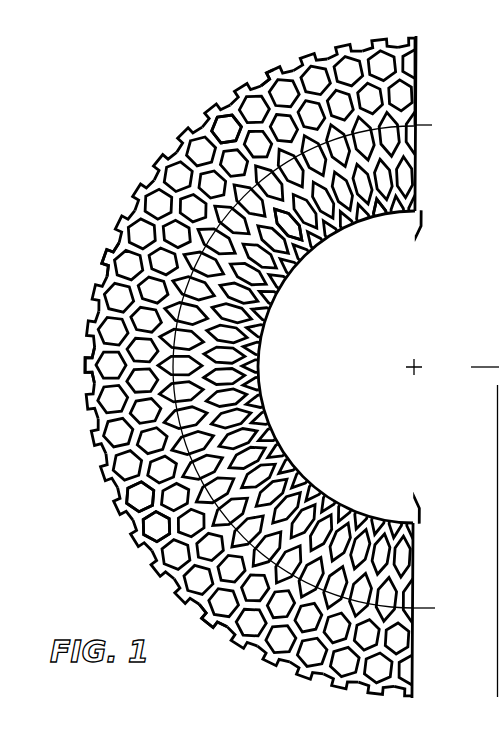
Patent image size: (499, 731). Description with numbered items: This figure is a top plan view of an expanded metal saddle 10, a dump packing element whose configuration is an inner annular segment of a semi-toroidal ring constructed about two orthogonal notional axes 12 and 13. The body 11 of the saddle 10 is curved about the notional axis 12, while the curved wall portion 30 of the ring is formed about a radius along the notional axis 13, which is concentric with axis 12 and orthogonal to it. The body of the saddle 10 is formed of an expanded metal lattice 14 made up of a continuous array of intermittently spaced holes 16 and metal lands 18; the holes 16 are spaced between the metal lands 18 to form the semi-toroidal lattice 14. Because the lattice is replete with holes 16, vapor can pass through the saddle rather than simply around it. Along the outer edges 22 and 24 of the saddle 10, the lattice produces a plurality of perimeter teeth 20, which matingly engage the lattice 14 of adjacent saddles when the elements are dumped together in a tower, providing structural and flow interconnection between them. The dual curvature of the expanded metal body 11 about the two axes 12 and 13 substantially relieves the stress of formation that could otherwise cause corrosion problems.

The expanded metal saddle 10 is at (162, 138).
The body 11 is at (266, 80).
The notional axis 12 is at (480, 367).
The notional axis 13 is at (417, 129).
The expanded metal lattice 14 is at (227, 123).
The holes 16 is at (316, 246).
The metal lands 18 is at (378, 218).
The perimeter teeth 20 is at (110, 260).
The outer edge 22 is at (417, 43).
The outer edge 24 is at (208, 625).
The curved wall portion 30 is at (307, 485).